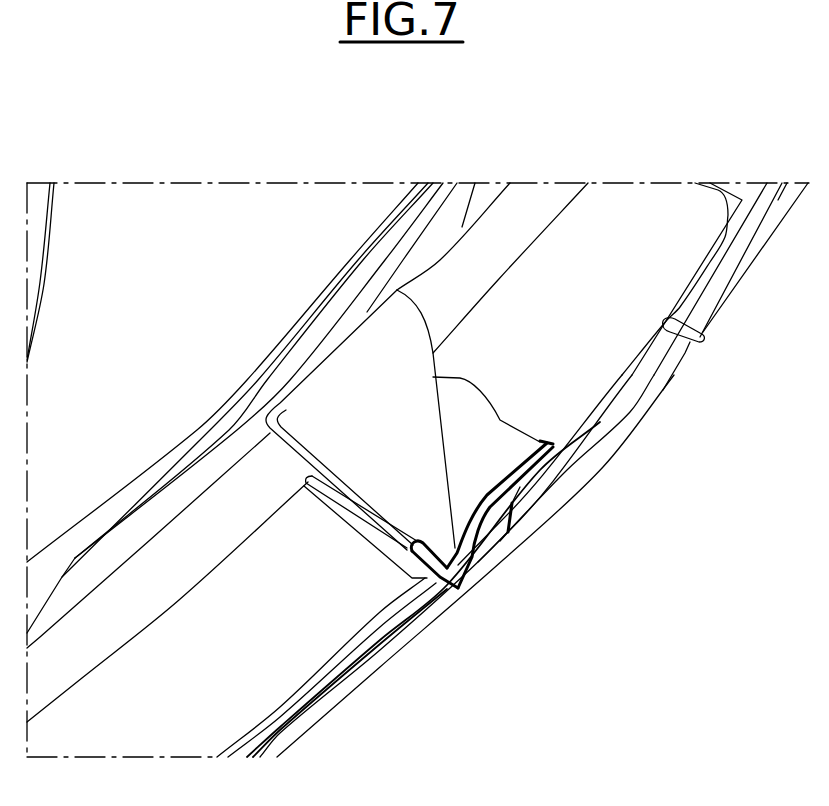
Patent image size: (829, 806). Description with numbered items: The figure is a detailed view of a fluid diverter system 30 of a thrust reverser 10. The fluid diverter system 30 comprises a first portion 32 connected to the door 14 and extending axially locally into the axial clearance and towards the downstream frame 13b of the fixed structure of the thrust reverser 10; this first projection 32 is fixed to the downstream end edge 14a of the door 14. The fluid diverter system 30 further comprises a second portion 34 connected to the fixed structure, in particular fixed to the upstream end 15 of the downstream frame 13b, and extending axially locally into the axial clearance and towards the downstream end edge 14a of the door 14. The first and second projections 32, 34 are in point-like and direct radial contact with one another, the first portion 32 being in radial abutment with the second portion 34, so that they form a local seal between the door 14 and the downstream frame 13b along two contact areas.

The thrust reverser 10 is at (775, 147).
The door 14 is at (322, 227).
The downstream end edge 14a is at (470, 222).
The upstream end 15 is at (627, 410).
The downstream frame 13b is at (590, 467).
The fluid diverter system 30 is at (356, 566).
The first portion 32 is at (418, 483).
The second portion 34 is at (520, 487).